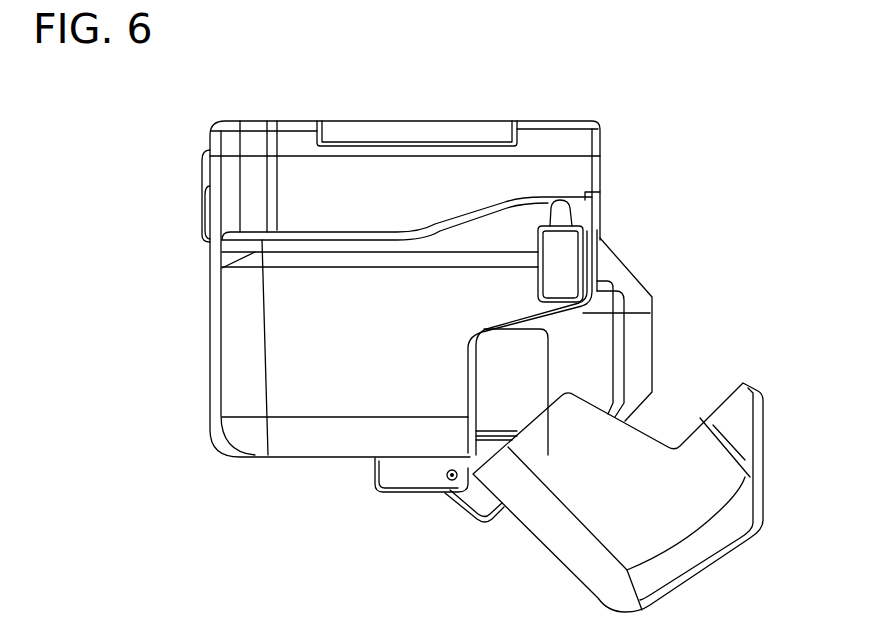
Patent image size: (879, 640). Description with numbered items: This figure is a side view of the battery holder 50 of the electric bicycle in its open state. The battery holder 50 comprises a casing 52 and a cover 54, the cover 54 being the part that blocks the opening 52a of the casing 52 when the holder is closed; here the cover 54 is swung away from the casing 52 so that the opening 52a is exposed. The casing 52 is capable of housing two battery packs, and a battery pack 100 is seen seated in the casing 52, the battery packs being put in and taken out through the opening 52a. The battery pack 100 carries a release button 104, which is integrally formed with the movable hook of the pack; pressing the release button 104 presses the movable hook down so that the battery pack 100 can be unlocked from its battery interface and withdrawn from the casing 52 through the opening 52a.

The battery holder 50 is at (204, 125).
The casing 52 is at (570, 173).
The opening 52a is at (598, 279).
The release button 104 is at (630, 257).
The battery pack 100 is at (638, 351).
The cover 54 is at (743, 425).